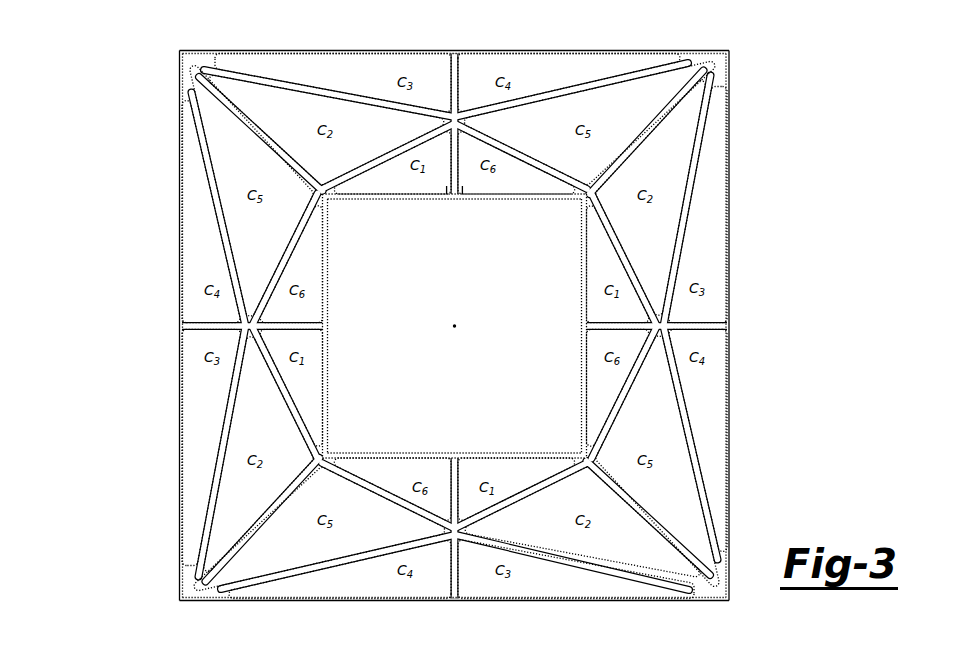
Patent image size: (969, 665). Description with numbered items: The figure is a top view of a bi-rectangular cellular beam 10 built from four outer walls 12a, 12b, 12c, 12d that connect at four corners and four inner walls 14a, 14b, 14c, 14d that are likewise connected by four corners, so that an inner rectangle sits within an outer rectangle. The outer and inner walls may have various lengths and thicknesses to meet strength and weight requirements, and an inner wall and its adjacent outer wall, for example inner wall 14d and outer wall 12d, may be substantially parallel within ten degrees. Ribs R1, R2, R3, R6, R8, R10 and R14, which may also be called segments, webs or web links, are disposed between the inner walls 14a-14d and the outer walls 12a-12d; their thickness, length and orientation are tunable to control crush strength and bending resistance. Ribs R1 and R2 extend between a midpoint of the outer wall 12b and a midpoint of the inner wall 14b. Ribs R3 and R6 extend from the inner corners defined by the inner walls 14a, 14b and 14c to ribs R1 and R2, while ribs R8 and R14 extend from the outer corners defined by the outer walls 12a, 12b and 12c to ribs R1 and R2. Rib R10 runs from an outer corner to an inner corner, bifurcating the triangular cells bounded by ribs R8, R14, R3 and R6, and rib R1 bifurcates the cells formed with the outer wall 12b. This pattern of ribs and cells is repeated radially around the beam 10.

The bi-rectangular cellular beam 10 is at (114, 36).
The outer wall 12a is at (456, 50).
The outer wall 12b is at (730, 328).
The outer wall 12c is at (452, 601).
The outer wall 12d is at (180, 327).
The inner wall 14a is at (455, 200).
The inner wall 14b is at (581, 327).
The inner wall 14c is at (453, 452).
The inner wall 14d is at (328, 325).
The rib R1 is at (462, 61).
The rib R2 is at (462, 189).
The rib R3 is at (556, 170).
The rib R6 is at (358, 168).
The rib R8 is at (279, 79).
The rib R10 is at (237, 113).
The rib R14 is at (609, 80).